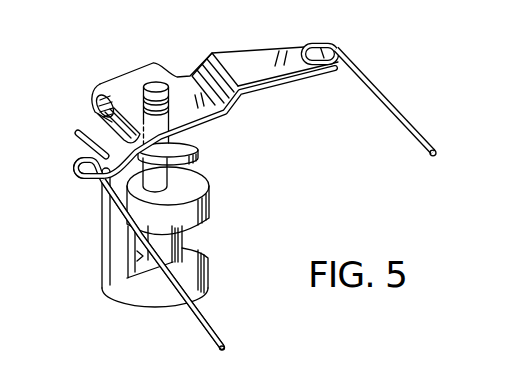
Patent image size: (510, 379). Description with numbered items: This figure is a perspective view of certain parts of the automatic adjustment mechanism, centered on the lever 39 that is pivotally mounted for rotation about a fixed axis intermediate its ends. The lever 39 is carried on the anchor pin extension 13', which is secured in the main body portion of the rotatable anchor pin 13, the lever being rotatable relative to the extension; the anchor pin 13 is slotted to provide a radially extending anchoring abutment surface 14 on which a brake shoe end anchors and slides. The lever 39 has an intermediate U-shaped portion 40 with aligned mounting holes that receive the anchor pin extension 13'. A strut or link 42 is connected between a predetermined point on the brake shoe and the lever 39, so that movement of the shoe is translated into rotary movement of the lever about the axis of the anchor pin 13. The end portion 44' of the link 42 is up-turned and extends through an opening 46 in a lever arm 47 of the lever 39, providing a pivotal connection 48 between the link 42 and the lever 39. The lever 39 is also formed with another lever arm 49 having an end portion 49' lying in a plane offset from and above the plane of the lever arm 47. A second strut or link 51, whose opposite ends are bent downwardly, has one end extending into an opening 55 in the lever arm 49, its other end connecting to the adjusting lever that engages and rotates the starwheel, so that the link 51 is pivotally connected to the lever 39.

The anchor pin 13 is at (187, 201).
The anchor pin extension 13' is at (194, 137).
The anchoring abutment surface 14 is at (140, 259).
The lever 39 is at (243, 121).
The intermediate U-shaped portion 40 is at (128, 73).
The strut or link 42 is at (210, 322).
The up-turned end portion of link 44' is at (61, 143).
The opening in lever arm 46 is at (76, 168).
The lever arm 47 is at (97, 112).
The pivotal connection 48 is at (95, 181).
The lever arm 49 is at (209, 66).
The end portion of lever arm 49' is at (265, 43).
The strut or link 51 is at (407, 123).
The opening in lever arm 55 is at (304, 47).